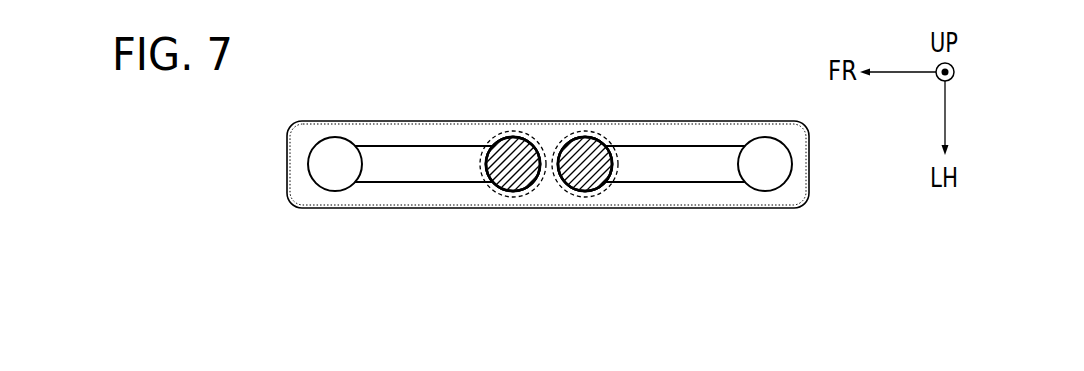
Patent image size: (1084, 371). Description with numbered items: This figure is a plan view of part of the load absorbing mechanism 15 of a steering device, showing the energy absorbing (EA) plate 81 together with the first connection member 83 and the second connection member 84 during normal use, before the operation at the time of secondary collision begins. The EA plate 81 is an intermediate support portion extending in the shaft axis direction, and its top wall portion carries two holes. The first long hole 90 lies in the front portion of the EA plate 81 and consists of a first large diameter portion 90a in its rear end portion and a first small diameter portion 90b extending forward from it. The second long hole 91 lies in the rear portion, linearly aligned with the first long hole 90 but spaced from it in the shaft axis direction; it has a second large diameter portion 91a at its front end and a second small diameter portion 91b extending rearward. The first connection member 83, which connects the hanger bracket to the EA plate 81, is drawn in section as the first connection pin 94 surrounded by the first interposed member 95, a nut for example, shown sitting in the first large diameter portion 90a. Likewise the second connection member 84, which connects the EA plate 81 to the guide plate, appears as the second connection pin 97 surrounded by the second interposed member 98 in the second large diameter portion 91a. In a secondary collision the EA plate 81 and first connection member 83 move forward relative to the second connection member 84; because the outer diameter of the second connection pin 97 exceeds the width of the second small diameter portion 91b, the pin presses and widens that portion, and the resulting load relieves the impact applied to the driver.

The load absorbing mechanism 15 is at (712, 95).
The energy absorbing (EA) plate 81 is at (317, 214).
The first connection member 83 is at (513, 157).
The first connection pin 94 is at (513, 157).
The second connection member 84 is at (585, 160).
The second connection pin 97 is at (585, 160).
The first interposed member 95 is at (552, 130).
The second interposed member 98 is at (607, 138).
The first long hole 90 is at (424, 237).
The first large diameter portion 90a is at (518, 182).
The first small diameter portion 90b is at (428, 181).
The second long hole 91 is at (674, 237).
The second large diameter portion 91a is at (597, 212).
The second small diameter portion 91b is at (670, 181).